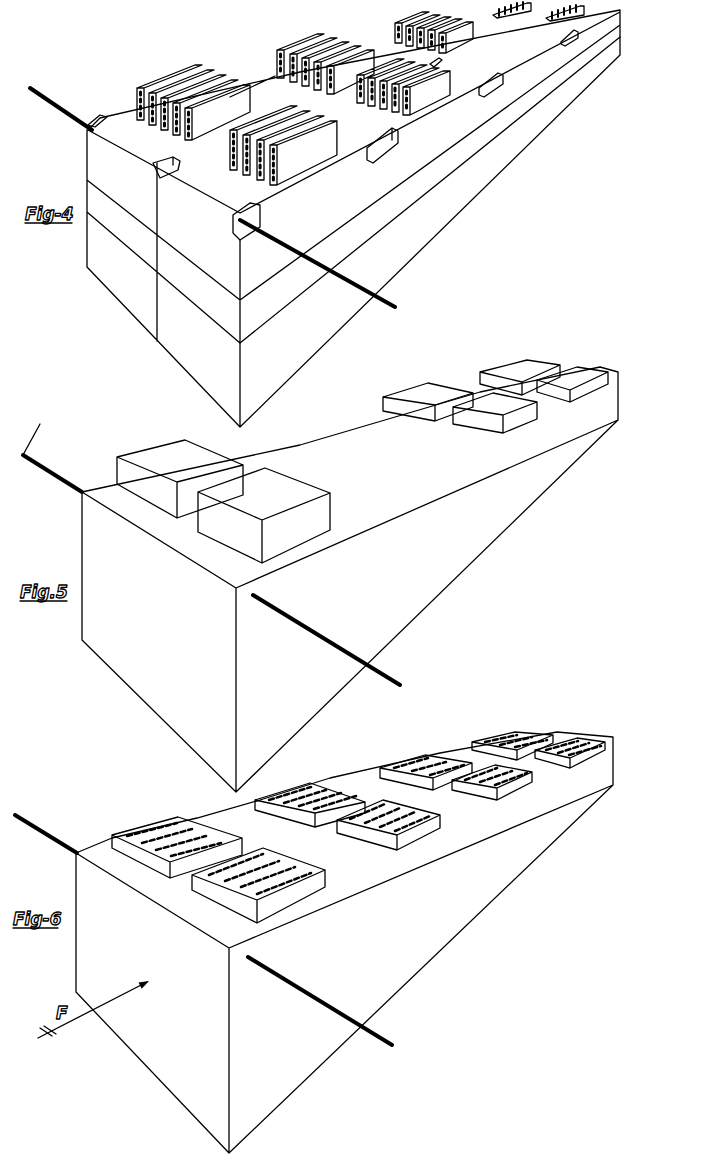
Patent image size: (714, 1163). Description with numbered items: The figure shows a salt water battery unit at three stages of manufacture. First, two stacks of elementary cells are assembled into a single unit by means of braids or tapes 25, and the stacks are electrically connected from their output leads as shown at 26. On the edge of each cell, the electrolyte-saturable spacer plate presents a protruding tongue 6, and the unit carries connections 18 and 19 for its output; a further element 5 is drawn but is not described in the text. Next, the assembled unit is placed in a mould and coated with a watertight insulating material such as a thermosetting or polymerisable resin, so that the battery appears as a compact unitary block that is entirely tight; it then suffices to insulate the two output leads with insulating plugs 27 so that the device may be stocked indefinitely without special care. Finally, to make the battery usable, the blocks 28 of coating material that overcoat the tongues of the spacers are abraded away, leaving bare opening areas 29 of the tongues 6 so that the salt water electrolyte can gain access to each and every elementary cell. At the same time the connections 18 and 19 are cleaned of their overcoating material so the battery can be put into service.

In FIG. 4, the connector bracket 5 is at (316, 147).
In FIG. 4, the tongue 6 is at (263, 172).
In FIG. 4, the connection 18 is at (400, 307).
In FIG. 5, the connection 18 is at (383, 667).
In FIG. 6, the connection 18 is at (388, 1032).
In FIG. 4, the connection 19 is at (60, 96).
In FIG. 5, the connection 19 is at (72, 470).
In FIG. 6, the connection 19 is at (50, 824).
In FIG. 4, the braids or tapes 25 is at (365, 228).
In FIG. 4, the output lead connection 26 is at (161, 176).
In FIG. 5, the insulating plug 27 is at (430, 689).
In FIG. 5, the block 28 is at (300, 525).
In FIG. 6, the block 28 is at (288, 900).
In FIG. 6, the bare opening area 29 is at (310, 877).